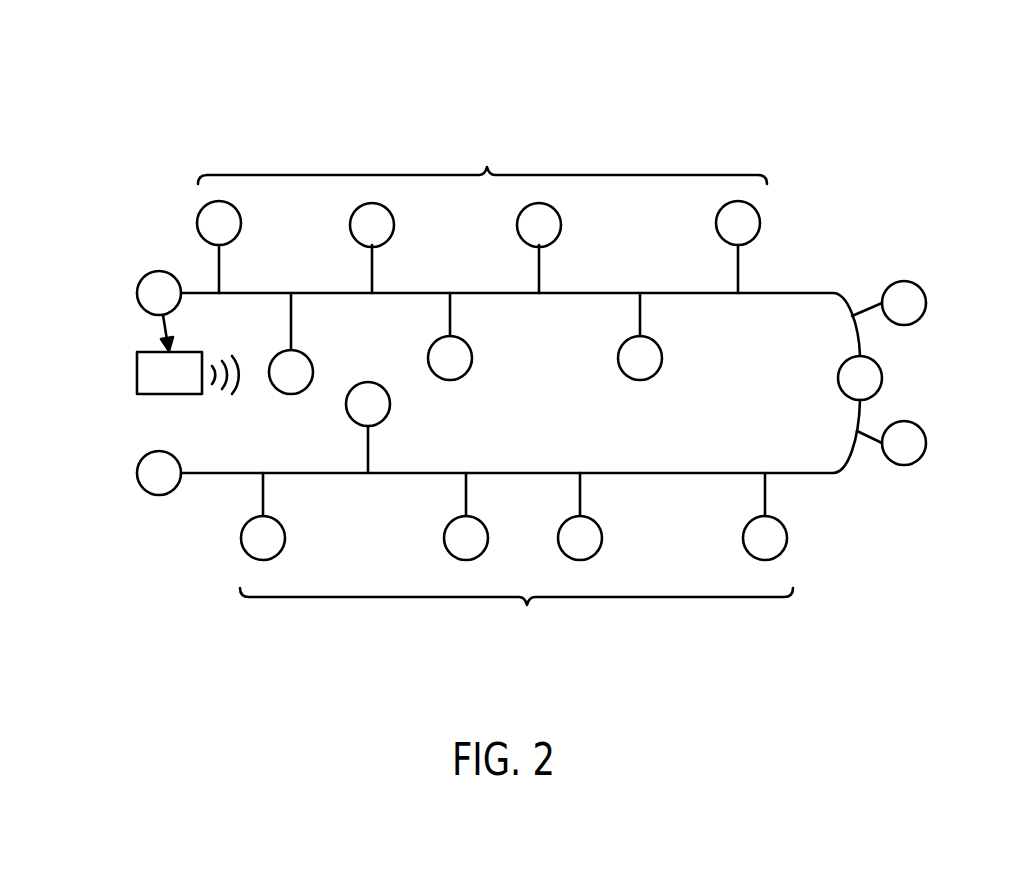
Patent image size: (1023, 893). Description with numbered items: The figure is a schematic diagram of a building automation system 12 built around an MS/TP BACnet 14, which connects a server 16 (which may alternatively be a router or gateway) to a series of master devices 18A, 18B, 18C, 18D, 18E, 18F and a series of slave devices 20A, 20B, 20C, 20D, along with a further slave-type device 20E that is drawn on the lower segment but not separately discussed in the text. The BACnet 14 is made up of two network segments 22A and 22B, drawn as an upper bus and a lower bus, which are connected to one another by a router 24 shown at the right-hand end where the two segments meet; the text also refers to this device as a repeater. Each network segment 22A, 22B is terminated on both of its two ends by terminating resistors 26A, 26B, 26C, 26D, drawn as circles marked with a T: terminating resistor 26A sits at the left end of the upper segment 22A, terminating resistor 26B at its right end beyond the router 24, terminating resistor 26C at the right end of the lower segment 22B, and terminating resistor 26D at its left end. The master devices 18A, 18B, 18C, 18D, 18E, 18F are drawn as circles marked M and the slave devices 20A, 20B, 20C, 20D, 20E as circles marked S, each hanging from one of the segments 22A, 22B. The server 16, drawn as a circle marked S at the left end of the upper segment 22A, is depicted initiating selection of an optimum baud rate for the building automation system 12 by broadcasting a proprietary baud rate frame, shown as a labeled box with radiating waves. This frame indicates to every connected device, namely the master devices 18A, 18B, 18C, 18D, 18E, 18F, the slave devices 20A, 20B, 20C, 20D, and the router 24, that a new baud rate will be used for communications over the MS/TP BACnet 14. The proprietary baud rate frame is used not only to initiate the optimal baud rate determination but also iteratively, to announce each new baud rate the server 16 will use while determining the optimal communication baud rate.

The building automation system 12 is at (72, 126).
The MS/TP BACnet 14 is at (698, 291).
The server 16 is at (137, 293).
The master device 18A is at (313, 372).
The master device 18B is at (561, 225).
The master device 18C is at (662, 358).
The master device 18D is at (760, 223).
The master device 18E is at (444, 540).
The master device 18F is at (285, 538).
The slave device 20A is at (394, 225).
The slave device 20B is at (472, 358).
The slave device 20C is at (787, 537).
The slave device 20D is at (602, 537).
The sensor 20E is at (390, 404).
The network segment 22A is at (482, 156).
The network segment 22B is at (516, 615).
The router 24 is at (882, 378).
The terminating resistor 26A is at (241, 223).
The terminating resistor 26B is at (926, 303).
The terminating resistor 26C is at (926, 443).
The terminating resistor 26D is at (137, 473).